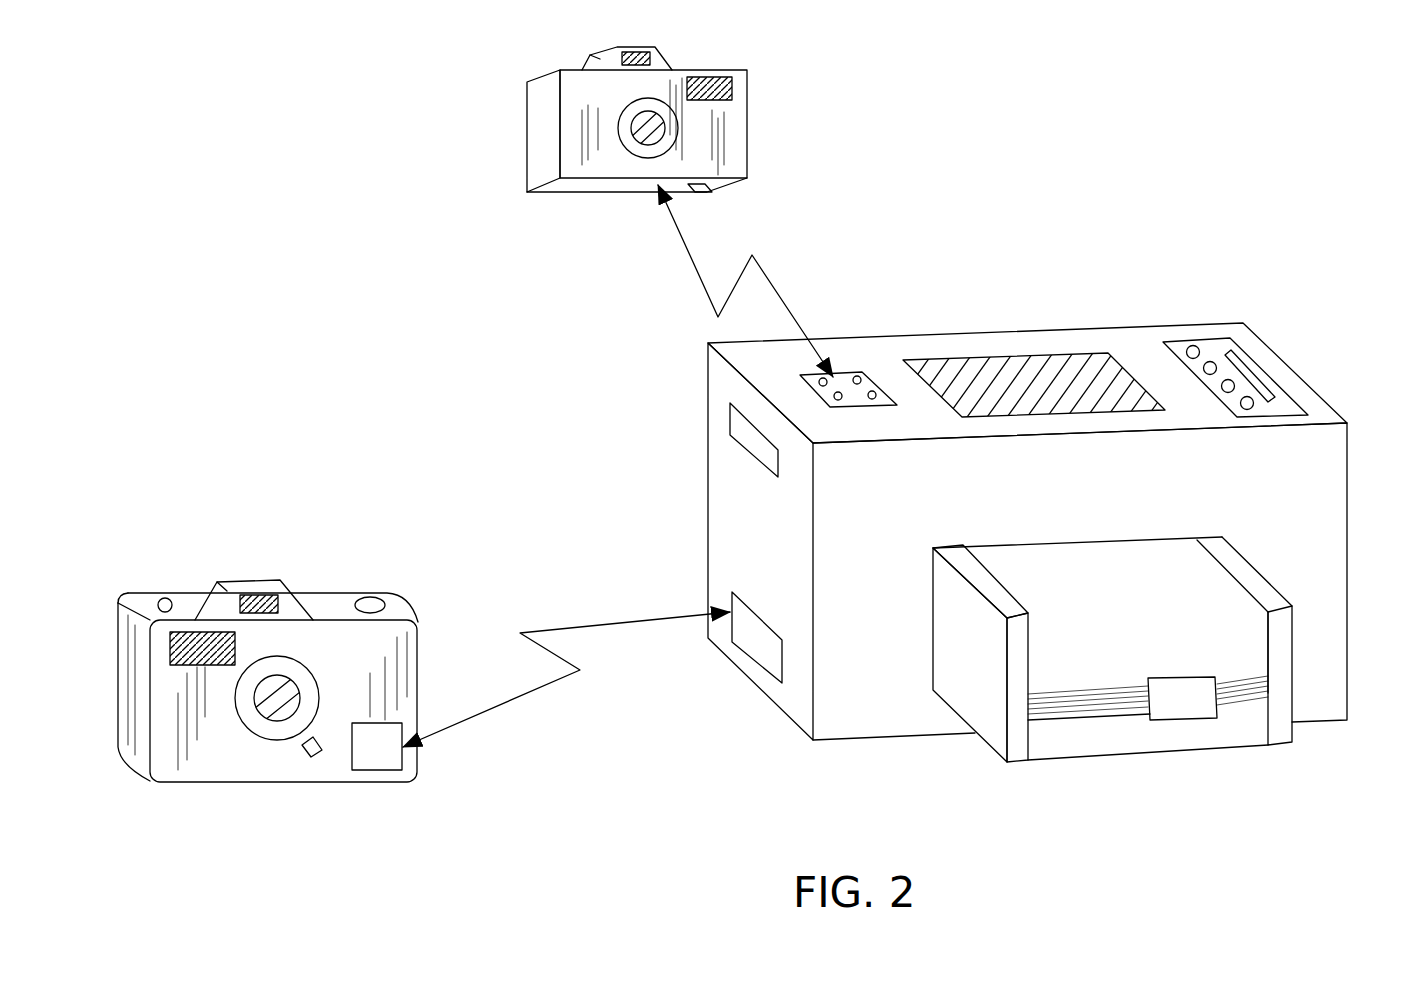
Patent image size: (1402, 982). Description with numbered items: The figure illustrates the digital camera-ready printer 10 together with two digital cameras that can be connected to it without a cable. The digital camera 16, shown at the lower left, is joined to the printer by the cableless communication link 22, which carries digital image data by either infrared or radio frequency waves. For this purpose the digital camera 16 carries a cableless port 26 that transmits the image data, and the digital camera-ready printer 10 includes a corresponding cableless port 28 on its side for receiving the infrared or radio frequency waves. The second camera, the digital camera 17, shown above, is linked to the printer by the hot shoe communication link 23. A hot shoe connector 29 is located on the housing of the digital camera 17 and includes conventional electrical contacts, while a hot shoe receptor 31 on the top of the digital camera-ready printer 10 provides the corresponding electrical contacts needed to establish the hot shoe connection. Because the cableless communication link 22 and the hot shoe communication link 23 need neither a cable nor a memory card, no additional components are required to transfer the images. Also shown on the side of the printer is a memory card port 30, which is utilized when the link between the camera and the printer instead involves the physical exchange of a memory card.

The digital camera-ready printer 10 is at (1162, 183).
The digital camera 16 is at (387, 556).
The digital camera 17 is at (765, 55).
The cableless communication link 22 is at (603, 587).
The hot shoe communication link 23 is at (648, 267).
The cableless port 26 is at (377, 768).
The cableless port 28 is at (760, 658).
The hot shoe connector 29 is at (700, 194).
The memory card port 30 is at (722, 418).
The hot shoe receptor 31 is at (808, 397).